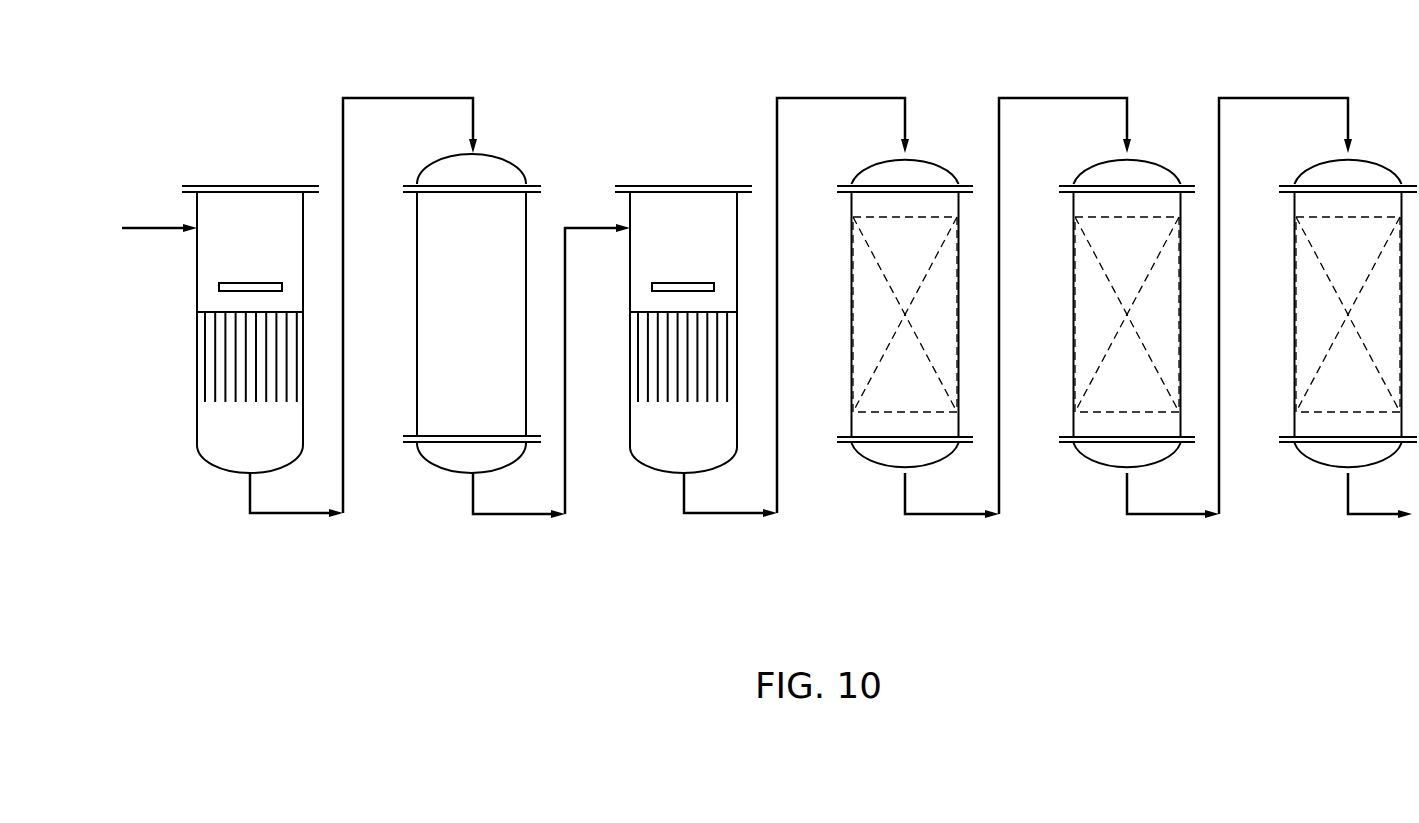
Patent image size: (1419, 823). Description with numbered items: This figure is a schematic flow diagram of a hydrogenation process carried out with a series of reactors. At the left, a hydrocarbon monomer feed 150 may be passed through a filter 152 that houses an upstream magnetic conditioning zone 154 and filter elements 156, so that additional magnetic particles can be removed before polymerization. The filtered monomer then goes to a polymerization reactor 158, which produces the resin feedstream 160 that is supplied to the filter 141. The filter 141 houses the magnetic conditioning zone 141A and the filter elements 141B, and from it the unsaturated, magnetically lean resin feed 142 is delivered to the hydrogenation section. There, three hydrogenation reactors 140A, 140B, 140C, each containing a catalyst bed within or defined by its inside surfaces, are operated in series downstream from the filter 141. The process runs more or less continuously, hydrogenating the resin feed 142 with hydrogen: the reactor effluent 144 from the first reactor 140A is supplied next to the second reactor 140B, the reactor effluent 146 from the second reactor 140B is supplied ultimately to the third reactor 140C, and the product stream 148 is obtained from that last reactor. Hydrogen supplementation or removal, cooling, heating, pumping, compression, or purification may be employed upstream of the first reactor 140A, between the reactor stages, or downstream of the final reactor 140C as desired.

The first hydrogenation reactor 140A is at (885, 153).
The second hydrogenation reactor 140B is at (1107, 153).
The third hydrogenation reactor 140C is at (1328, 153).
The filter 141 is at (702, 184).
The magnetic conditioning zone 141A is at (667, 283).
The filter elements 141B is at (678, 386).
The magnetically lean resin feed 142 is at (837, 97).
The reactor effluent from first reactor 144 is at (950, 516).
The reactor effluent from second reactor 146 is at (1172, 516).
The product stream 148 is at (1372, 516).
The hydrocarbon monomer feed 150 is at (136, 227).
The filter 152 is at (197, 281).
The upstream magnetic conditioning zone 154 is at (272, 283).
The filter elements 156 is at (216, 367).
The polymerization reactor 158 is at (452, 154).
The resin feedstream 160 is at (517, 516).